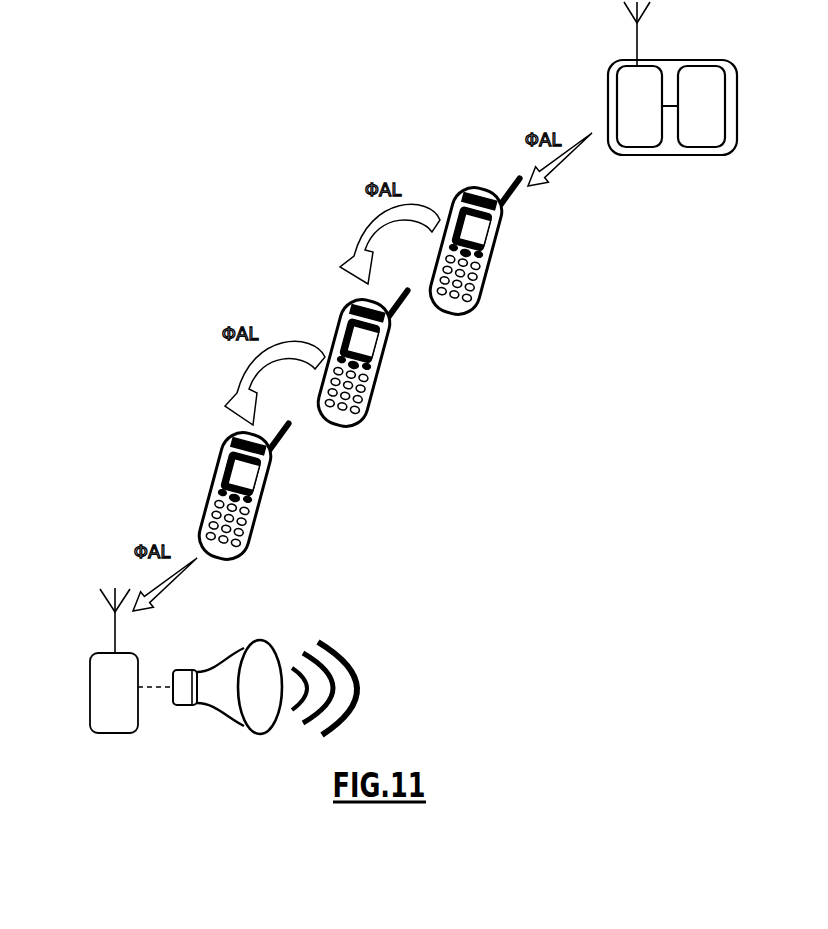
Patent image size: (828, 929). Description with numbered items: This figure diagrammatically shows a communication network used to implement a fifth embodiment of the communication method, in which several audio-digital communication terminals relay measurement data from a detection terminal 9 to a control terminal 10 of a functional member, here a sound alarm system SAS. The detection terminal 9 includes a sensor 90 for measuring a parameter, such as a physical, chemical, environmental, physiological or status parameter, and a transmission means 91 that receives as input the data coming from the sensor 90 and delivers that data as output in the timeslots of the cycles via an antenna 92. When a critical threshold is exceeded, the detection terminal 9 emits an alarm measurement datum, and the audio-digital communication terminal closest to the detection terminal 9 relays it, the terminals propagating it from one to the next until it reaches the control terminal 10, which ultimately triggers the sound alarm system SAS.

The detection terminal 9 is at (679, 156).
The control terminal 10 is at (89, 678).
The sensor 90 is at (701, 106).
The transmission means 91 is at (647, 106).
The antenna 92 is at (637, 41).
The sound alarm system SAS is at (225, 717).